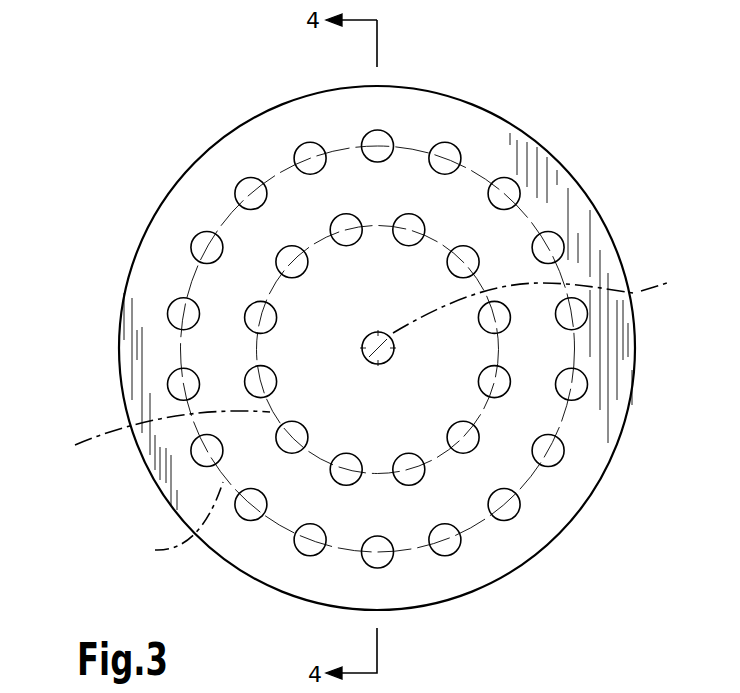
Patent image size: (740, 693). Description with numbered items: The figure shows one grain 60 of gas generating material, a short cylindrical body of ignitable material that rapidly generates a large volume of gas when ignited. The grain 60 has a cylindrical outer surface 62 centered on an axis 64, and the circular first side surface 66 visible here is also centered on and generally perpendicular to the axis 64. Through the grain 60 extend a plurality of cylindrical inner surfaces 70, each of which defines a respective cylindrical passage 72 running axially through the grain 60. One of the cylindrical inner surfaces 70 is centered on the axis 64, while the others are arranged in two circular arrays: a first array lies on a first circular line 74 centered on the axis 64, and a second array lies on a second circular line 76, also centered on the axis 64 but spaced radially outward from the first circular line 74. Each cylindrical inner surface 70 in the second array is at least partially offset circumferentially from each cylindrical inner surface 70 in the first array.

The grain 60 is at (110, 108).
The cylindrical outer surface 62 is at (325, 88).
The axis 64 is at (545, 300).
The first side surface 66 is at (205, 184).
The cylindrical inner surface 70 is at (170, 310).
The cylindrical passage 72 is at (196, 230).
The first circular line 74 is at (153, 442).
The second circular line 76 is at (173, 522).